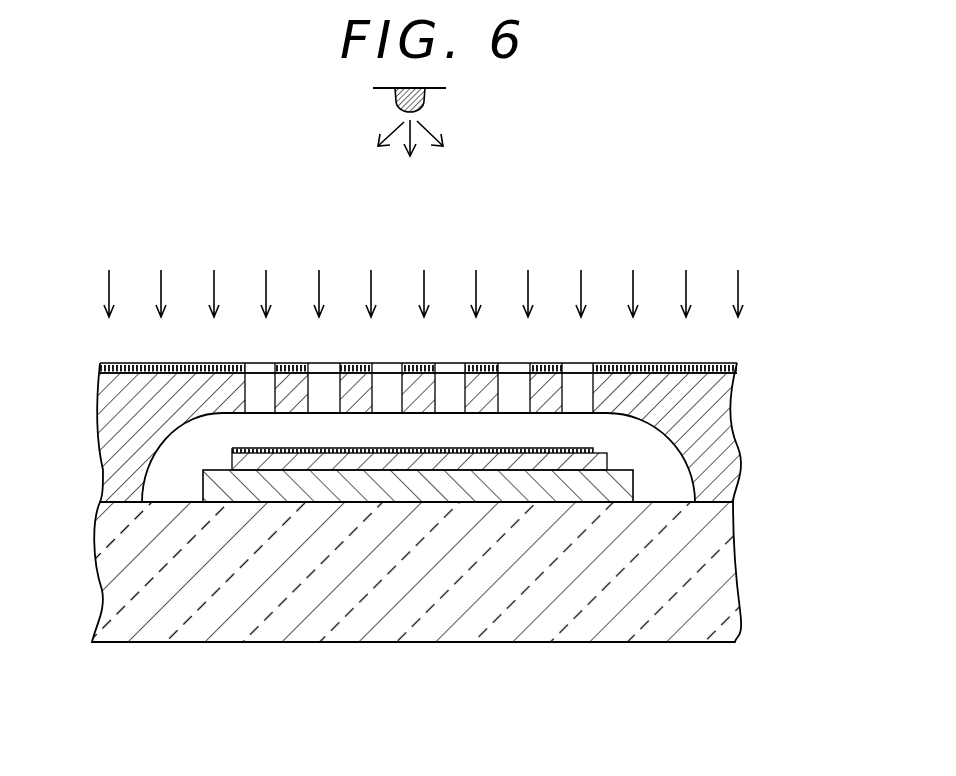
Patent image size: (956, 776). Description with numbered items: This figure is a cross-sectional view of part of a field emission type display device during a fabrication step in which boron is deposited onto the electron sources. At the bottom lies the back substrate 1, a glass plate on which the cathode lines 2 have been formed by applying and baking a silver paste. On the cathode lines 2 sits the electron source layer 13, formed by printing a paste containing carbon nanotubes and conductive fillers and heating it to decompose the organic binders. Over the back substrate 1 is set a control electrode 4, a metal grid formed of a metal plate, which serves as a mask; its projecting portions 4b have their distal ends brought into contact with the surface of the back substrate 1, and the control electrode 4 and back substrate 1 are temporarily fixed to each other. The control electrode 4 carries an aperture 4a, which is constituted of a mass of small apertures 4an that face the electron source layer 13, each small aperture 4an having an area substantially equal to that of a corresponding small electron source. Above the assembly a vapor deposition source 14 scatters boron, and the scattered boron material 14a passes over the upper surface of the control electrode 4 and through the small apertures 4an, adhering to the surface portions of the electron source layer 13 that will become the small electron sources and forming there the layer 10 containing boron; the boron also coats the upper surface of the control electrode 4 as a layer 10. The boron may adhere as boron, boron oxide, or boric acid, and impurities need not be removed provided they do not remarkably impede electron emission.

The back substrate 1 is at (727, 582).
The cathode lines 2 is at (640, 487).
The control electrode 4 is at (716, 402).
The aperture 4a is at (452, 386).
The small apertures 4an is at (323, 385).
The projecting portions 4b is at (118, 432).
The layer containing boron 10 is at (737, 365).
The electron source layer 13 is at (607, 462).
The vapor deposition source 14 is at (428, 97).
The scattered boron material 14a is at (698, 285).